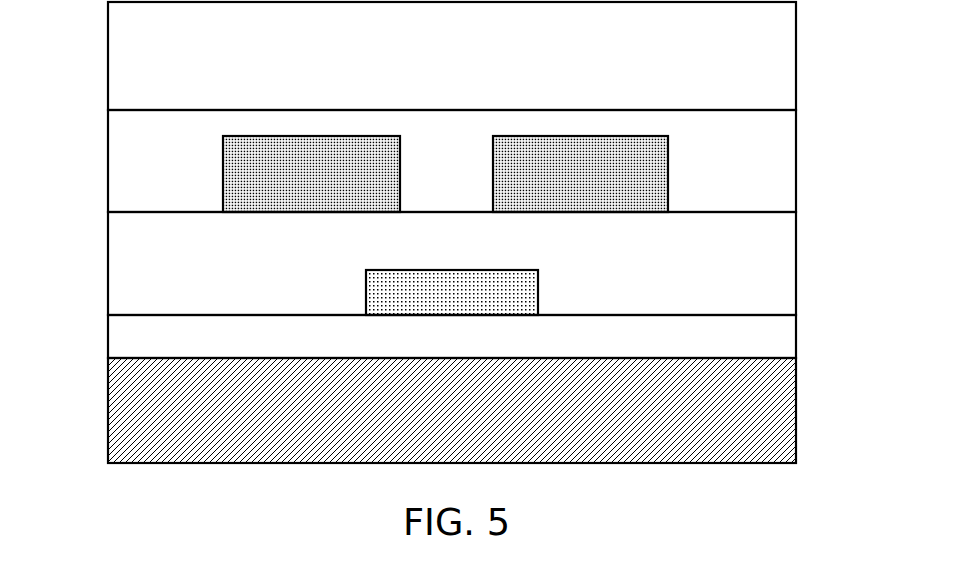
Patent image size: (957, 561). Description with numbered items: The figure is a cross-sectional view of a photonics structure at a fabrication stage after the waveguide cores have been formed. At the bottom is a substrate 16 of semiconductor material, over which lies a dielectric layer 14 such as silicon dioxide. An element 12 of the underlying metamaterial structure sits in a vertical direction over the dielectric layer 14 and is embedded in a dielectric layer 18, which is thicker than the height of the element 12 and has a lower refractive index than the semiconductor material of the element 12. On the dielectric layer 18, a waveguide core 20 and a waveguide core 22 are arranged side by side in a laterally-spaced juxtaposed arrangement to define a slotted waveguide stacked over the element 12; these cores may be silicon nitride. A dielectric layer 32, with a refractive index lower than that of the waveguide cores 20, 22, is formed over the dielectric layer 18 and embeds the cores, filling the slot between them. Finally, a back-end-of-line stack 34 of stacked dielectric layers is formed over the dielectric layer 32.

The elements 12 is at (508, 293).
The dielectric layer 14 is at (748, 338).
The substrate 16 is at (140, 412).
The dielectric layer 18 is at (140, 285).
The waveguide core 20 is at (275, 170).
The waveguide core 22 is at (625, 168).
The dielectric layer 32 is at (135, 132).
The back-end-of-line stack 34 is at (737, 60).